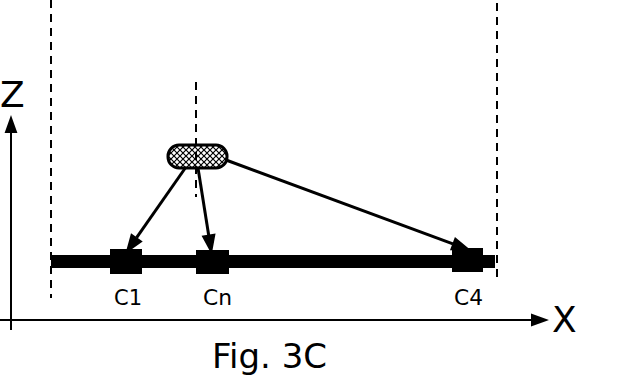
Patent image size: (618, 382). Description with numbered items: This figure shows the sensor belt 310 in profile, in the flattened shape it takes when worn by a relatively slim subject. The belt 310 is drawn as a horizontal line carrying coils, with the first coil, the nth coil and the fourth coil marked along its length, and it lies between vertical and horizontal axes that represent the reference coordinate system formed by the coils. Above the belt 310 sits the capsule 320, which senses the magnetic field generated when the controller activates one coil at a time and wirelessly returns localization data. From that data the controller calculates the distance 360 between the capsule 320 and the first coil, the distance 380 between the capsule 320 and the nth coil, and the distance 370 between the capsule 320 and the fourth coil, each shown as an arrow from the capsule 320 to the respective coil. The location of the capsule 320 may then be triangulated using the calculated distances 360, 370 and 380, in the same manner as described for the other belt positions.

The sensor belt 310 is at (383, 255).
The capsule 320 is at (188, 145).
The calculated distance 360 is at (157, 209).
The calculated distance 370 is at (341, 204).
The calculated distance 380 is at (204, 205).